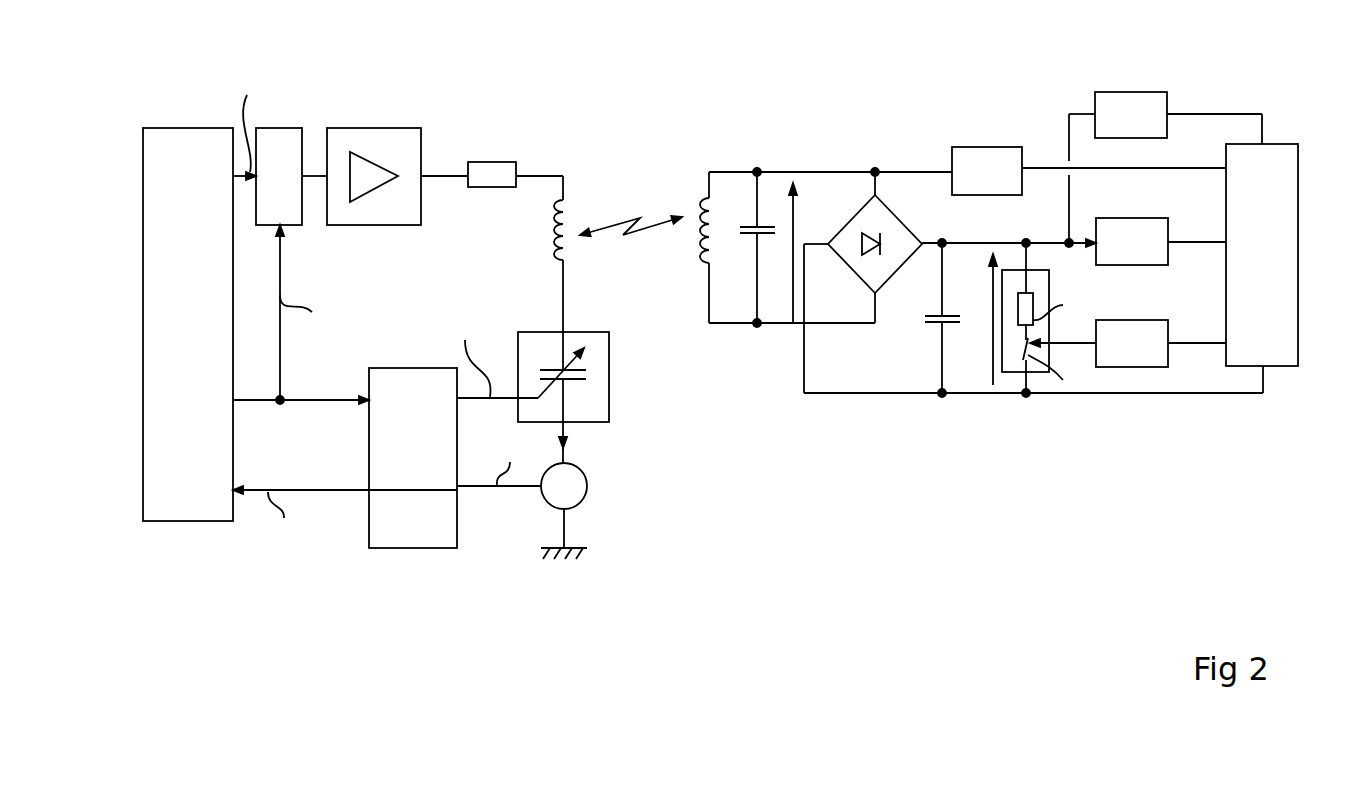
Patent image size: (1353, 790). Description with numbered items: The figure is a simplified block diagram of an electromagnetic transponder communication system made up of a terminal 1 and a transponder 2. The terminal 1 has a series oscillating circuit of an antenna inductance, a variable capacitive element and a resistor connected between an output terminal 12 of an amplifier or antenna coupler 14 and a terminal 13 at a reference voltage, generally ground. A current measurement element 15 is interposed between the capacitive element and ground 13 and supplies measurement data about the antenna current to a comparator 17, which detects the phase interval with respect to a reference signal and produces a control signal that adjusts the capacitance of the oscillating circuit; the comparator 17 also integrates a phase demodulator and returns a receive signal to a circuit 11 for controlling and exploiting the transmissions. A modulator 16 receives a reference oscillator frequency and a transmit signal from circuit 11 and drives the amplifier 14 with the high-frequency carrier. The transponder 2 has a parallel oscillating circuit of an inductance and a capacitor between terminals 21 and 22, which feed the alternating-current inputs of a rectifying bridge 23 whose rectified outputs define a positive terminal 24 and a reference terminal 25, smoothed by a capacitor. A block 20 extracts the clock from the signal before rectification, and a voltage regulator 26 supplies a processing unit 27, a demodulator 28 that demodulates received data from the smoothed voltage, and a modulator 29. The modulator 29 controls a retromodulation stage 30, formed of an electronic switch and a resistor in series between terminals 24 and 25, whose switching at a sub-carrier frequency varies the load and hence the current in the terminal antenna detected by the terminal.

The terminal 1 is at (328, 590).
The transponder 2 is at (907, 505).
The circuit for controlling and exploiting the transmissions 11 is at (185, 128).
The output terminal 12 is at (443, 178).
The terminal at a reference voltage 13 is at (565, 533).
The amplifier or antenna coupler 14 is at (375, 128).
The current measurement element 15 is at (588, 492).
The modulator 16 is at (278, 128).
The comparator 17 is at (403, 548).
The clock extraction block 20 is at (978, 147).
The first terminal of the resonant circuit 21 is at (757, 172).
The second terminal of the resonant circuit 22 is at (757, 323).
The rectifying bridge 23 is at (896, 226).
The positive terminal 24 is at (942, 243).
The reference terminal 25 is at (942, 393).
The voltage regulator 26 is at (1160, 92).
The processing unit 27 is at (1298, 188).
The demodulator 28 is at (1122, 218).
The modulator 29 is at (1128, 320).
The retromodulation stage 30 is at (1049, 292).